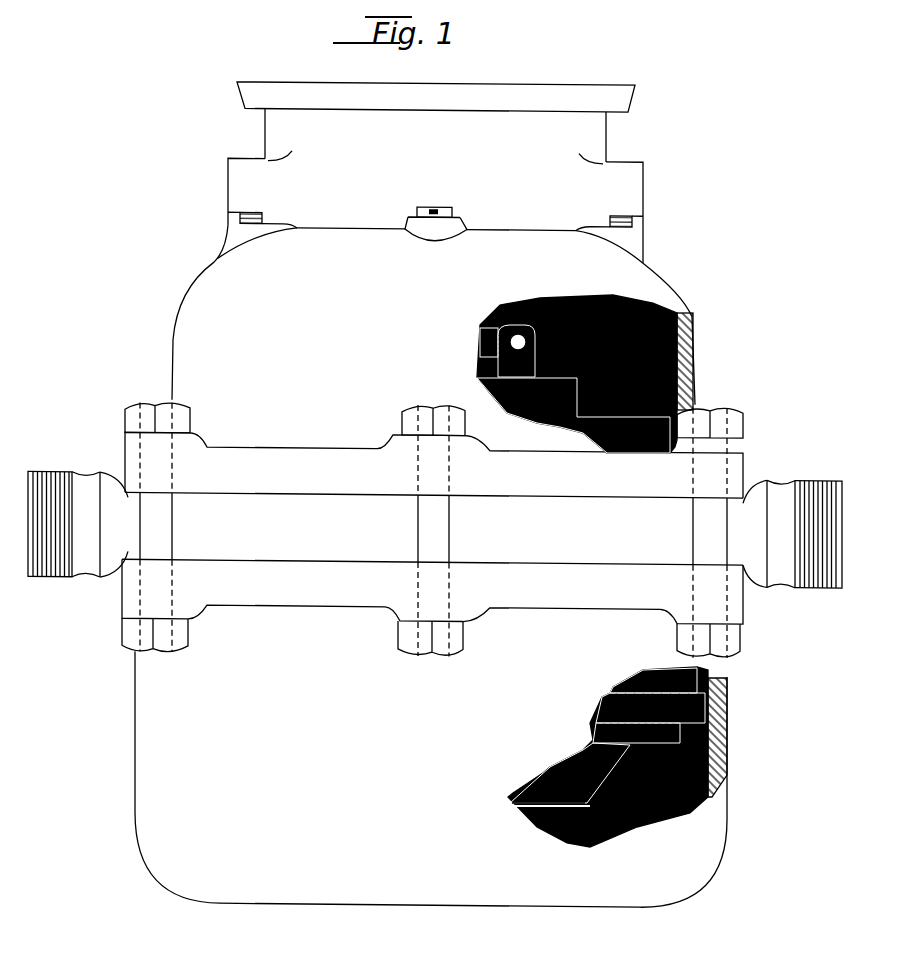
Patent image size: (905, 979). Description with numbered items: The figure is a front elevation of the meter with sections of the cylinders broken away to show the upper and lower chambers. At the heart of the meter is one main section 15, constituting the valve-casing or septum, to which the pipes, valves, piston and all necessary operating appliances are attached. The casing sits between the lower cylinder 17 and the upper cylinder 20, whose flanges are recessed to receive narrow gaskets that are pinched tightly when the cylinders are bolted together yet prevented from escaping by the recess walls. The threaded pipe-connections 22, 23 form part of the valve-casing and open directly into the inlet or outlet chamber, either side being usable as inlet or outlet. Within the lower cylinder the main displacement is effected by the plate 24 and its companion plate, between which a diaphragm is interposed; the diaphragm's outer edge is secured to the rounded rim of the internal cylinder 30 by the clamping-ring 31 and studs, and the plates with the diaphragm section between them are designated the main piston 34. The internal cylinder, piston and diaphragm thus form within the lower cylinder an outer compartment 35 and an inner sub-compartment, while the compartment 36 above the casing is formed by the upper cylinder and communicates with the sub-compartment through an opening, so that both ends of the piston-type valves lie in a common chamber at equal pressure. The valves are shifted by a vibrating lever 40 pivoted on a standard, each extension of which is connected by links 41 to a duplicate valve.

The main section 15 is at (432, 528).
The lower cylinder 17 is at (431, 774).
The upper cylinder 20 is at (433, 243).
The threaded pipe-connection 22 is at (60, 457).
The threaded pipe-connection 23 is at (813, 477).
The plate 24 is at (612, 758).
The internal cylinder 30 is at (653, 680).
The clamping-ring 31 is at (650, 708).
The main piston 34 is at (548, 797).
The outer compartment 35 is at (617, 757).
The compartment 36 is at (585, 374).
The vibrating lever 40 is at (481, 343).
The links 41 is at (516, 351).